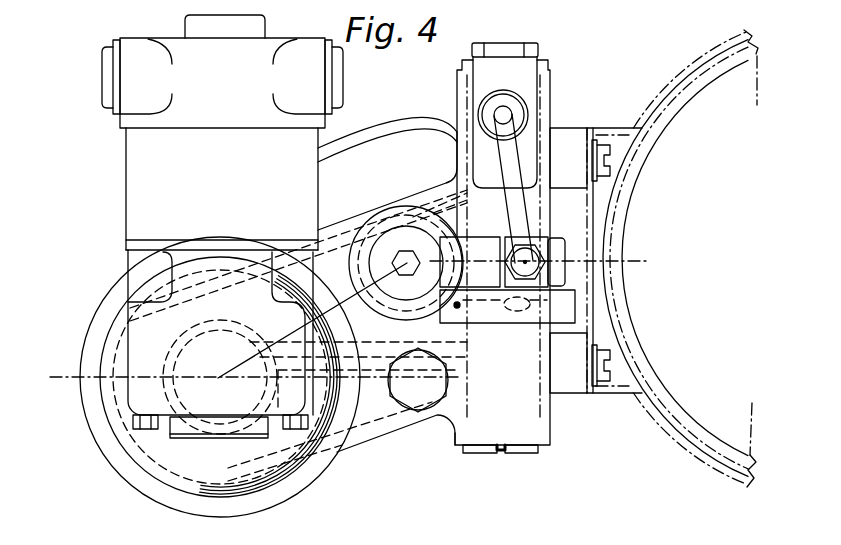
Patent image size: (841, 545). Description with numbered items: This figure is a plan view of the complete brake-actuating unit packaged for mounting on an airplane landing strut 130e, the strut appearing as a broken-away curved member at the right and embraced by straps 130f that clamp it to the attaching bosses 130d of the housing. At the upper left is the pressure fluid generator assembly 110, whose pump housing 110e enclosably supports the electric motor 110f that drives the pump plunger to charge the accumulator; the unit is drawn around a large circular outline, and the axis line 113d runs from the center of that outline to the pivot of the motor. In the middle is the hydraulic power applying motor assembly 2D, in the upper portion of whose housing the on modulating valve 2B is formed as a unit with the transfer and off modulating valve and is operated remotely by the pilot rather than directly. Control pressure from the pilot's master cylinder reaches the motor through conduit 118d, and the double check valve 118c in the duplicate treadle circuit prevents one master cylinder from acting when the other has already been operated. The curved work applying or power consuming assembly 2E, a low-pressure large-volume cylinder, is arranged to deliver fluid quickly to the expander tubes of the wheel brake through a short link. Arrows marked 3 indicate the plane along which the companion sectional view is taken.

The pressure fluid generator assembly 110 is at (108, 325).
The electric motor 110f is at (199, 102).
The pump housing 110e is at (138, 452).
The pivot pin axis 113d is at (262, 356).
The work applying or power consuming assembly 2E is at (392, 119).
The power applying motor assembly 2D is at (368, 210).
The on modulating valve 2B is at (499, 461).
The double check valve 118c is at (537, 94).
The conduit 118d is at (522, 215).
The attaching bosses 130d is at (578, 127).
The landing strut 130e is at (733, 478).
The embracing straps 130f is at (661, 436).
The section line 3 is at (47, 360).